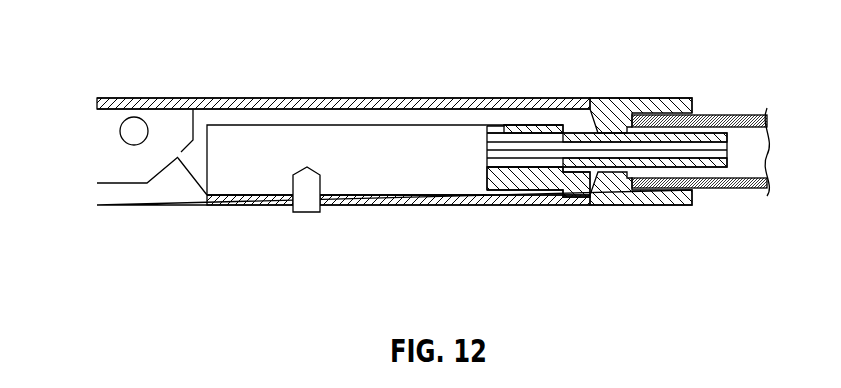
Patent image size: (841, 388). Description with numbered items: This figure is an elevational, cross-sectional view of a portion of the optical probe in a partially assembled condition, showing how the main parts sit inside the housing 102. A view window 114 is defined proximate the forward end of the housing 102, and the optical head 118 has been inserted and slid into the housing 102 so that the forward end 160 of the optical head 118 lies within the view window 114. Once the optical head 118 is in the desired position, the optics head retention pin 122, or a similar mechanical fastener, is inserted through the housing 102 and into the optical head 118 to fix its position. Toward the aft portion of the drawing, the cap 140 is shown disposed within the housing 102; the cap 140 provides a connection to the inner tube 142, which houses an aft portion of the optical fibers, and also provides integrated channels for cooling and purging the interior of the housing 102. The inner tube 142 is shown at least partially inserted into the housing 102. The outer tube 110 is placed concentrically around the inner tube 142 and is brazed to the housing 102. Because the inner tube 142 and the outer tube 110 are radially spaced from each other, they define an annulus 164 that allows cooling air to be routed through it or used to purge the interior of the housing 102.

The housing 102 is at (190, 94).
The outer tube 110 is at (740, 115).
The view window 114 is at (176, 157).
The optical head 118 is at (442, 125).
The optics head retention pin 122 is at (307, 192).
The cap 140 is at (527, 183).
The inner tube 142 is at (663, 165).
The forward end of the optical head 160 is at (179, 158).
The annulus 164 is at (717, 122).